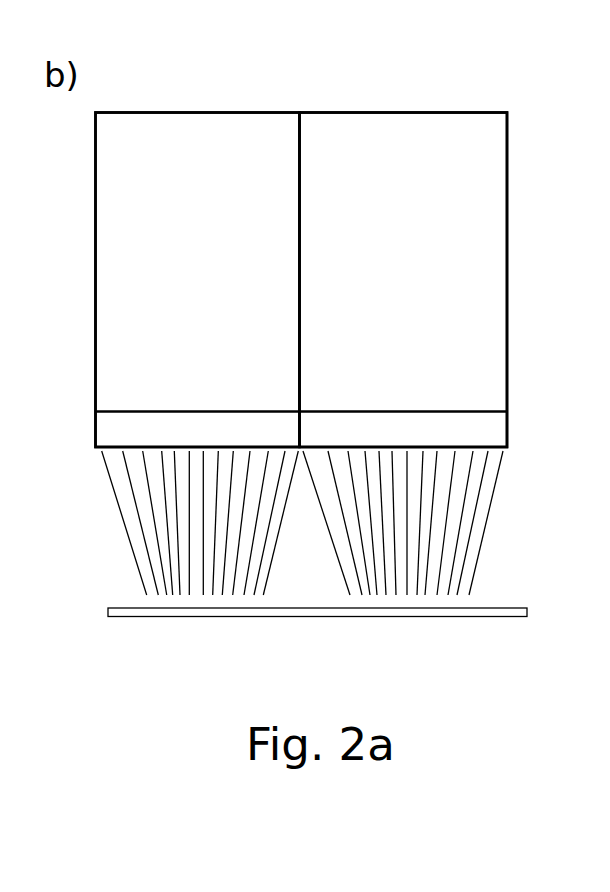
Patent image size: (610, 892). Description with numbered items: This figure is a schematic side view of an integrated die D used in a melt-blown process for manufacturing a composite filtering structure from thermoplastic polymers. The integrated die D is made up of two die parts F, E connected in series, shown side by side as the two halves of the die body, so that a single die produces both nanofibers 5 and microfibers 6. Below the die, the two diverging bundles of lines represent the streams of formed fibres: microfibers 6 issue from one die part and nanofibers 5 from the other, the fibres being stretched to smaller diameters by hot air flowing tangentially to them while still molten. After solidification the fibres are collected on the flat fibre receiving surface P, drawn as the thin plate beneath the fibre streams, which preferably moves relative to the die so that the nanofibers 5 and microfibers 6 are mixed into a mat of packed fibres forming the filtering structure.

The integrated die D is at (218, 351).
The die part F is at (198, 250).
The die part E is at (423, 249).
The microfibers 6 is at (166, 523).
The nanofibers 5 is at (431, 516).
The fibre receiving surface P is at (357, 578).